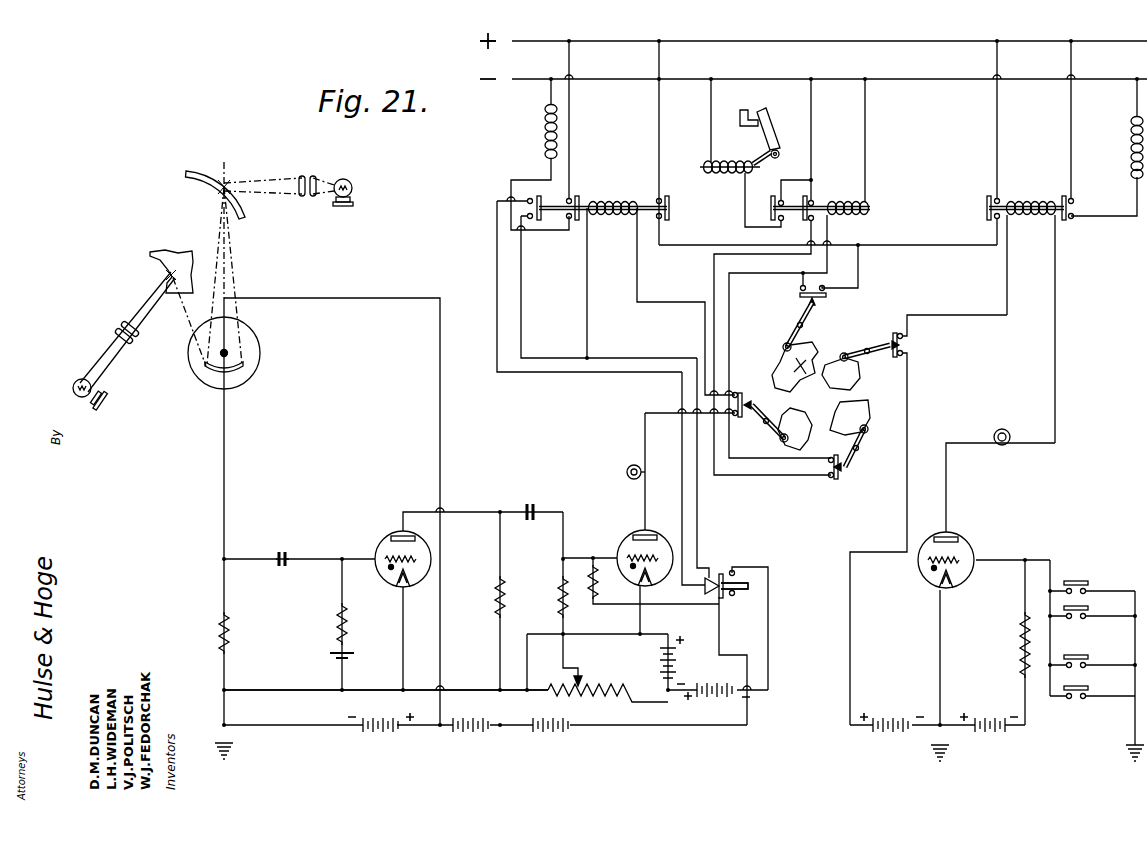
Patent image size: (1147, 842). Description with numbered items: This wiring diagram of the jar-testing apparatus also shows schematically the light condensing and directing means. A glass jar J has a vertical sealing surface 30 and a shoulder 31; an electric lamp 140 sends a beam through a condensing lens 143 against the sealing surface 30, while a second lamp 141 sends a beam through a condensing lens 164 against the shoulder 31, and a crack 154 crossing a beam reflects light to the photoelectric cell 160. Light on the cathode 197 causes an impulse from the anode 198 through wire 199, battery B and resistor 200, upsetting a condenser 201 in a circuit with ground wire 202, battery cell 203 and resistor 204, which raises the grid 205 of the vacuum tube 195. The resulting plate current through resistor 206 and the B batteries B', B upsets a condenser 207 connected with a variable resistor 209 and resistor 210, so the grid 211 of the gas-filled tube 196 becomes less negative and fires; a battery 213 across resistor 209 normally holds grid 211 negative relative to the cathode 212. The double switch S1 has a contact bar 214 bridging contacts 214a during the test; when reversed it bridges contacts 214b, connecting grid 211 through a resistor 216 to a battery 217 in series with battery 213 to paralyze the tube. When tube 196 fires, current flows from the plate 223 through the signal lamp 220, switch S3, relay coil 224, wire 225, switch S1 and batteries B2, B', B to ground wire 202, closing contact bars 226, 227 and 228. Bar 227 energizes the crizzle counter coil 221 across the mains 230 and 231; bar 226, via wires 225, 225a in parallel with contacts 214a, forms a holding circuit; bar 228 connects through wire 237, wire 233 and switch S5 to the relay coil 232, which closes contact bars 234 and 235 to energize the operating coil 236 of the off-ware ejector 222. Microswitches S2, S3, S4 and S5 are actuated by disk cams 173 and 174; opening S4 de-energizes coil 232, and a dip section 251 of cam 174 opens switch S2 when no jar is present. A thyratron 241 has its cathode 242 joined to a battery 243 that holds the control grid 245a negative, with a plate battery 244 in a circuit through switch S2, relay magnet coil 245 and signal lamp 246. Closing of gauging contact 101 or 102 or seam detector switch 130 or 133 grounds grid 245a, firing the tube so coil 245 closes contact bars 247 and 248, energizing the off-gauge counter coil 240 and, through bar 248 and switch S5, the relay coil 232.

The sealing surface 30 is at (201, 170).
The crack 154 is at (227, 183).
The condensing lens 143 is at (320, 176).
The electric lamp 140 is at (352, 183).
The glass jar J is at (150, 254).
The shoulder 31 is at (166, 275).
The condensing lens 164 is at (130, 342).
The electric lamp 141 is at (73, 385).
The photoelectric cell 160 is at (258, 348).
The anode 198 is at (228, 351).
The cathode 197 is at (237, 370).
The wire 199 is at (440, 350).
The resistor 200 is at (226, 638).
The condenser 201 is at (278, 559).
The ground wire 202 is at (294, 690).
The battery cell 203 is at (331, 652).
The resistor 204 is at (337, 620).
The vacuum tube 195 is at (390, 546).
The grid 205 is at (392, 572).
The resistor 206 is at (497, 586).
The condenser 207 is at (546, 510).
The variable resistor 209 is at (585, 695).
The resistor 210 is at (560, 586).
The grid 211 is at (628, 552).
The cathode 212 is at (654, 580).
The battery 213 is at (658, 658).
The contact bar 214 is at (728, 575).
The contacts 214a is at (700, 476).
The contacts 214b is at (735, 596).
The double switch S1 is at (726, 572).
The resistor 216 is at (594, 584).
The battery 217 is at (717, 698).
The signal lamp 220 is at (627, 471).
The plate 223 is at (650, 536).
The gas filled tube 196 is at (635, 530).
The B battery B is at (381, 733).
The B battery B' is at (470, 736).
The B battery B2 is at (550, 737).
The positive main 230 is at (628, 40).
The main 231 is at (628, 78).
The magnet coil 221 is at (547, 142).
The contact bar 226 is at (541, 205).
The contact bar 227 is at (580, 205).
The relay coil 224 is at (620, 201).
The contact bar 228 is at (671, 203).
The wire 237 is at (661, 124).
The wire 233 is at (715, 241).
The wire 225 is at (666, 357).
The wire 225a is at (625, 372).
The off-ware ejector 222 is at (788, 130).
The operating coil 236 is at (744, 162).
The contact bar 234 is at (772, 206).
The contact bar 235 is at (802, 205).
The relay coil 232 is at (846, 202).
The microswitch S2 is at (923, 520).
The microswitch S3 is at (761, 418).
The microswitch S4 is at (849, 460).
The microswitch S5 is at (814, 298).
The disk cam 173 is at (794, 422).
The disk cam 174 is at (858, 406).
The dip section 251 is at (848, 372).
The contact bar 248 is at (986, 206).
The relay magnet coil 245 is at (1043, 185).
The contact bar 247 is at (1080, 201).
The magnet coil 240 is at (1130, 145).
The signal lamp 246 is at (1014, 428).
The thyratron 241 is at (965, 542).
The control grid 245a is at (975, 560).
The cathode 242 is at (955, 582).
The battery 244 is at (914, 738).
The battery 243 is at (994, 735).
The gauging contact 101 is at (1082, 584).
The gauging contact 102 is at (1082, 608).
The seam detector switch 130 is at (1080, 650).
The seam detector switch 133 is at (1070, 688).